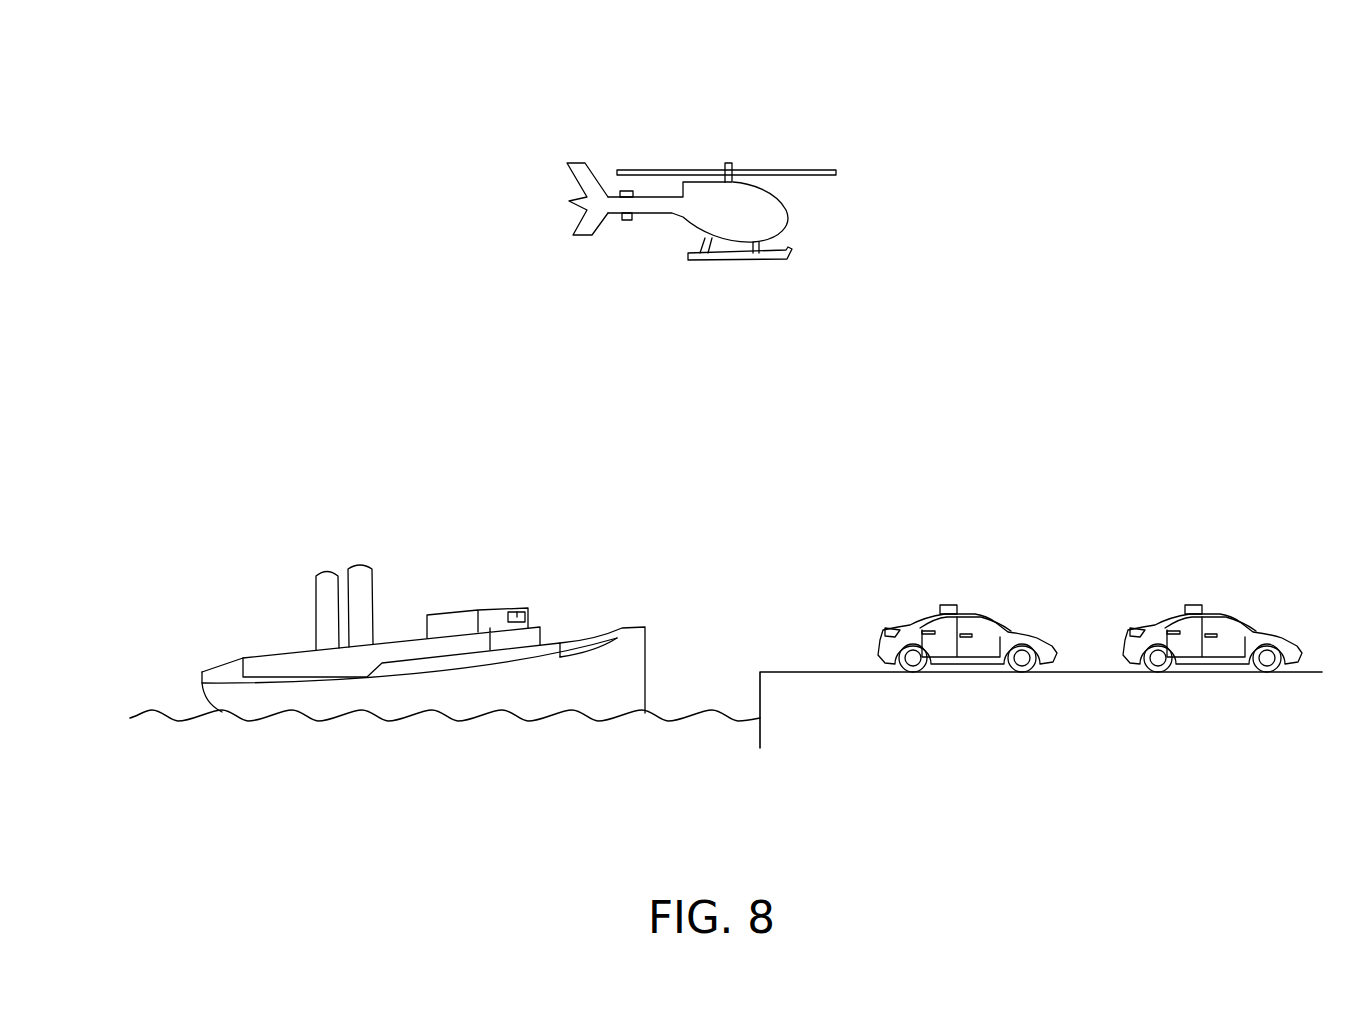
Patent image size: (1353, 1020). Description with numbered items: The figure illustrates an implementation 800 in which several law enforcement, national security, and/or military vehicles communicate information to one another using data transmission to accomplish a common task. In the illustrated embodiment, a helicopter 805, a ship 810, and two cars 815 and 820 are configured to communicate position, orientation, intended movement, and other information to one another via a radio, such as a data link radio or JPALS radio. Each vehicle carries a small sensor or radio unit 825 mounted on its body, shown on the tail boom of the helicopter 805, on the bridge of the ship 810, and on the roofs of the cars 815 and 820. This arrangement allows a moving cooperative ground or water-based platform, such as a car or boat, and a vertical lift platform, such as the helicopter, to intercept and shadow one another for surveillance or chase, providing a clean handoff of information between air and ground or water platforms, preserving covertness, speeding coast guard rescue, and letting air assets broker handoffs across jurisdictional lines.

The implementation 800 is at (357, 100).
The helicopter 805 is at (775, 208).
The ship 810 is at (630, 637).
The car 815 is at (1013, 635).
The car 820 is at (1262, 638).
The sensor system 825 is at (620, 192).